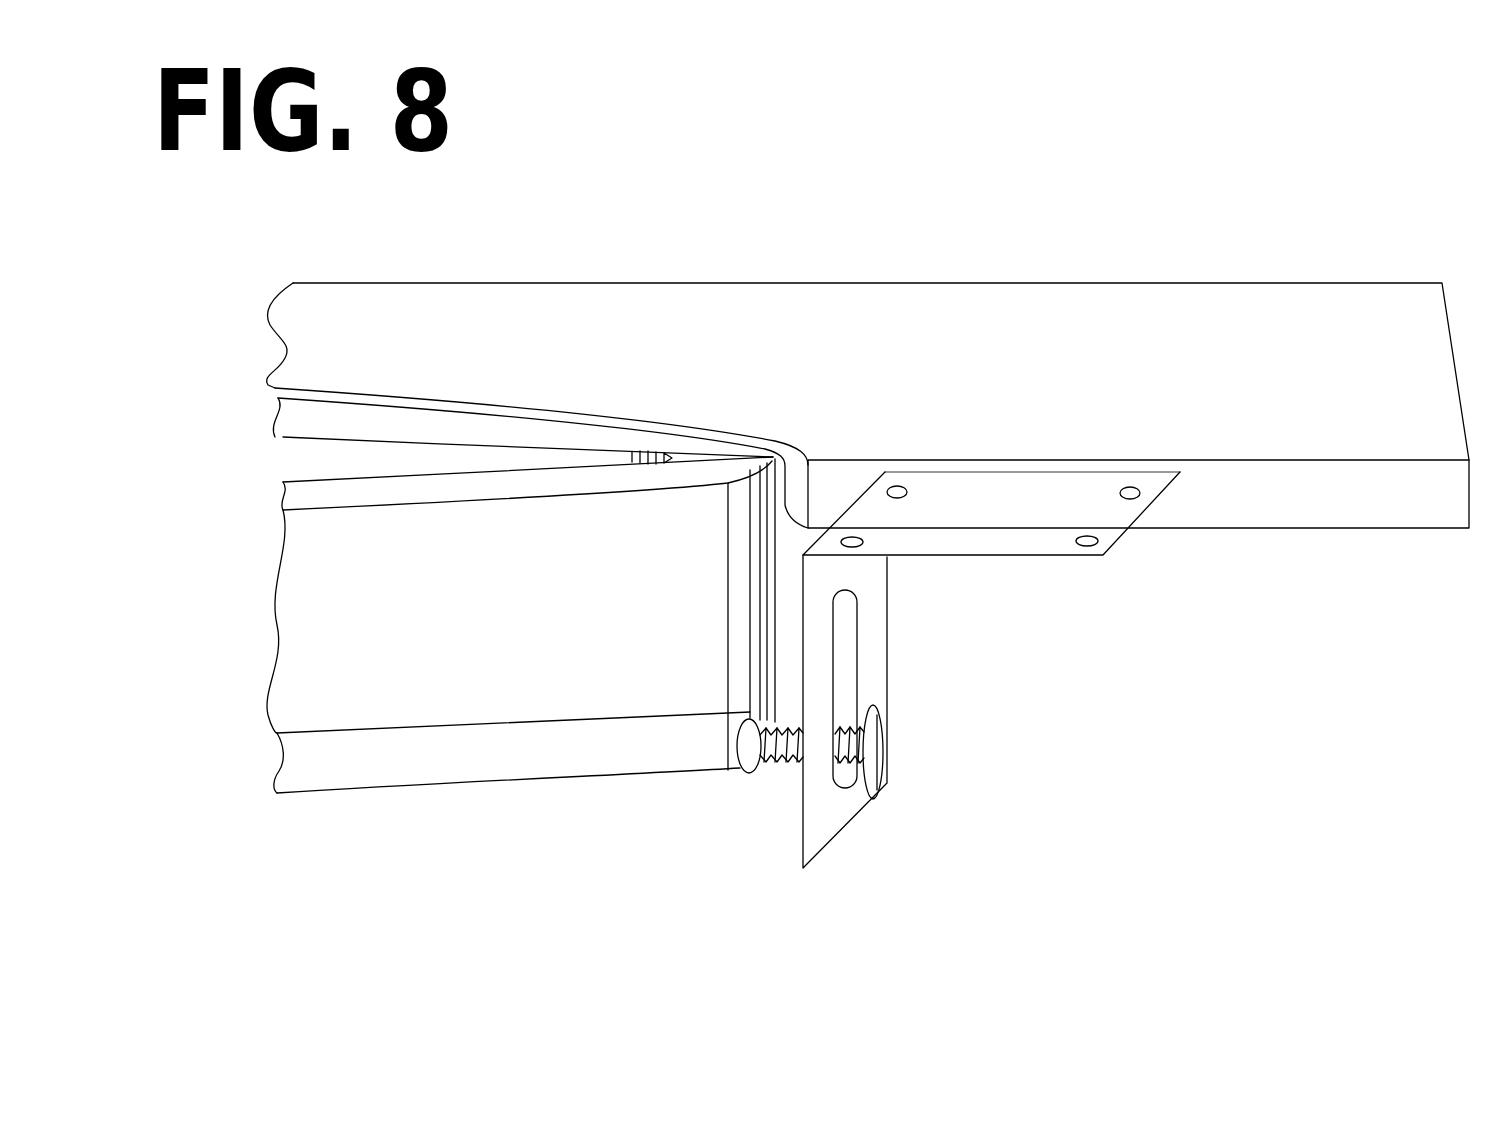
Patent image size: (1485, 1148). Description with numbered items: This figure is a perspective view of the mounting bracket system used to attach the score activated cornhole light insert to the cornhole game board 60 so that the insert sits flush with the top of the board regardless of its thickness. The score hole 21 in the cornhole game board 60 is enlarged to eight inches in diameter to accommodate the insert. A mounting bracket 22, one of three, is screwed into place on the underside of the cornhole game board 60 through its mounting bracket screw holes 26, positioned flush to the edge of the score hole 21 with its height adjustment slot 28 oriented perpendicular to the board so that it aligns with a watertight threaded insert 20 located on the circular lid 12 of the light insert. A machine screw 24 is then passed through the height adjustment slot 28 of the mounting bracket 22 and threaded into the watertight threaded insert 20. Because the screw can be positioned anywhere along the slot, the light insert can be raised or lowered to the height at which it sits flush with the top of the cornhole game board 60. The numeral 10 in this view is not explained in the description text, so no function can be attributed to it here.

The curved panel 10 is at (377, 598).
The circular lid 12 is at (423, 757).
The watertight threaded insert 20 is at (722, 773).
The score hole 21 is at (787, 447).
The mounting bracket 22 is at (870, 580).
The machine screw 24 is at (873, 803).
The mounting bracket screw hole 26 is at (897, 492).
The height adjustment slot 28 is at (845, 643).
The cornhole game board 60 is at (1217, 353).